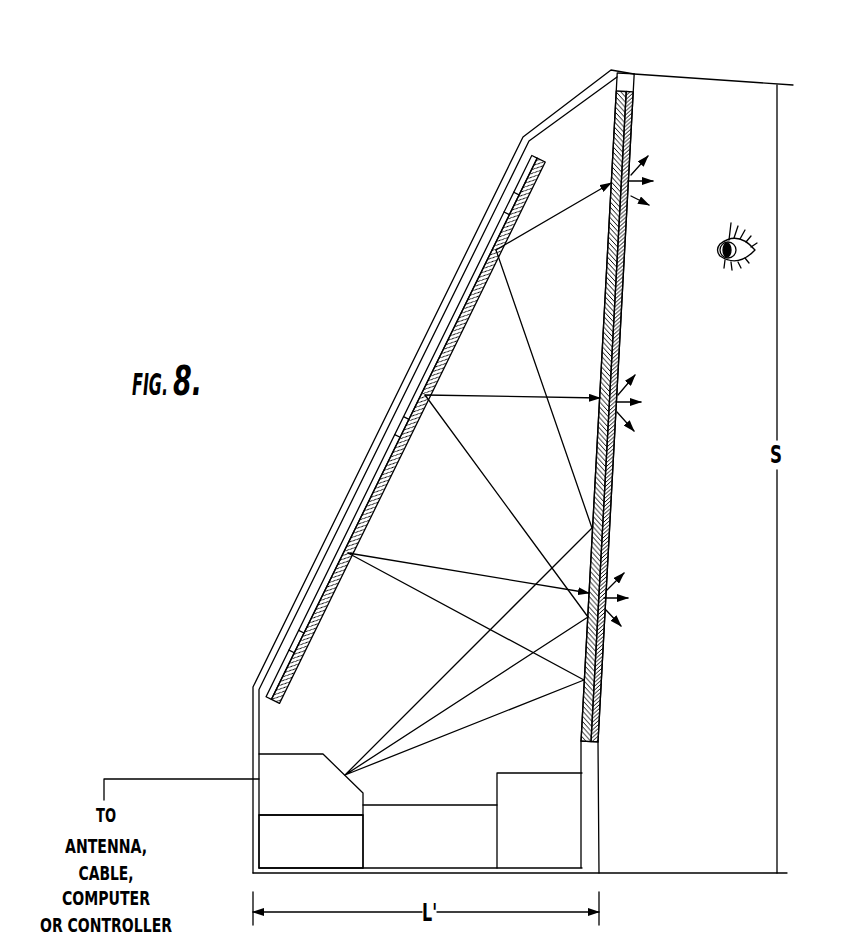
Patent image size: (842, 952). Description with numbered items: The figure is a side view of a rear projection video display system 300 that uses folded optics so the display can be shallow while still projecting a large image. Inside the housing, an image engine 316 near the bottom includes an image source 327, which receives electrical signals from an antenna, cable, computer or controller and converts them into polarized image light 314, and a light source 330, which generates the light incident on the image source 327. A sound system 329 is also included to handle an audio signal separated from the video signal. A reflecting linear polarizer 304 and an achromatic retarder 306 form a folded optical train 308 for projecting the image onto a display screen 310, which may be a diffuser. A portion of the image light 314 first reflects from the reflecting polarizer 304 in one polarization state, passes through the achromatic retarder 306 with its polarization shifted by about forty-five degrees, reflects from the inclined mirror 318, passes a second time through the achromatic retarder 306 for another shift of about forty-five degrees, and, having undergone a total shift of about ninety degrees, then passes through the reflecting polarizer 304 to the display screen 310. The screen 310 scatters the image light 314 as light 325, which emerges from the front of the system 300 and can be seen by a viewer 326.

The rear projection video display system 300 is at (342, 242).
The reflecting linear polarizer 304 is at (614, 156).
The achromatic retarder 306 is at (527, 194).
The folded optical train 308 is at (568, 100).
The display screen 310 is at (635, 97).
The image light 314 is at (545, 248).
The image engine 316 is at (320, 806).
The mirror 318 is at (453, 323).
The scattered light 325 is at (638, 208).
The viewer 326 is at (743, 228).
The image source 327 is at (280, 757).
The sound system 329 is at (553, 856).
The light source 330 is at (320, 854).